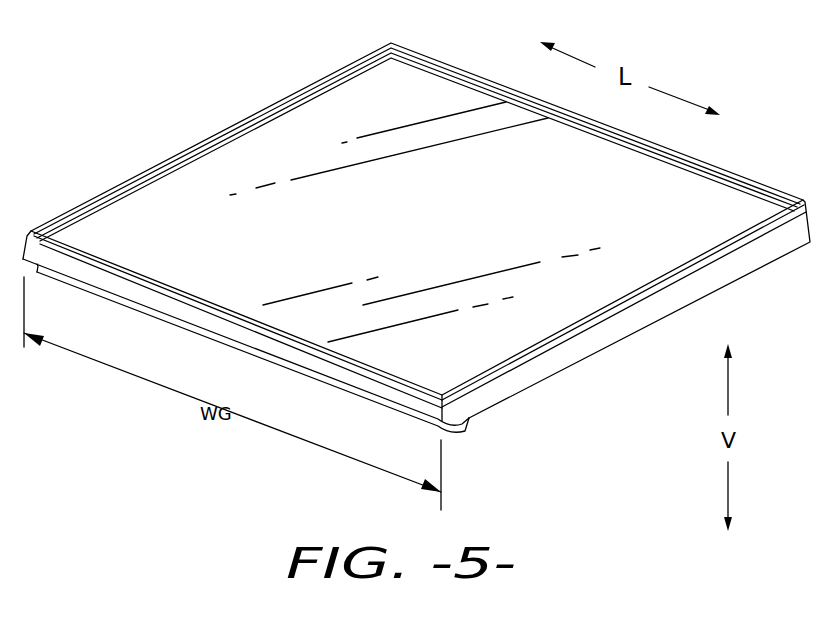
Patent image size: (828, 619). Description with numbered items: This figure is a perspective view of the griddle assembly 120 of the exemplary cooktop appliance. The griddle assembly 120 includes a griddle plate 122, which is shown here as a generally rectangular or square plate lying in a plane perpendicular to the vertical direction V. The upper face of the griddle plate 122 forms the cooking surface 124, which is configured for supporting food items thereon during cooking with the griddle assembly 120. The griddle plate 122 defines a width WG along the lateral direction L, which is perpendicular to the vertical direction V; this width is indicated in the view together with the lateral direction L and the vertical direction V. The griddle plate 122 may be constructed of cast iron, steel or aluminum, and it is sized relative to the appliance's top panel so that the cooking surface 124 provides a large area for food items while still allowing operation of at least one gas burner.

The griddle assembly 120 is at (416, 225).
The griddle plate 122 is at (680, 203).
The cooking surface 124 is at (414, 86).